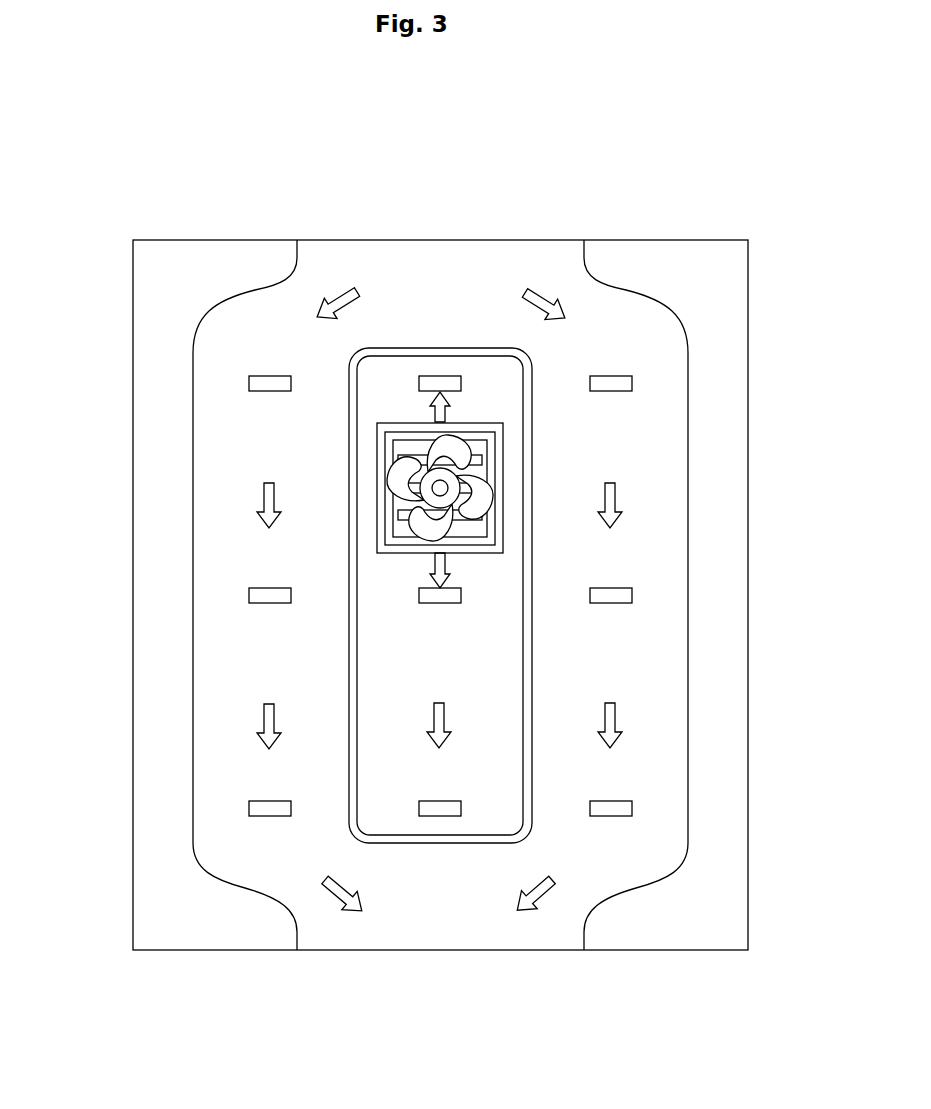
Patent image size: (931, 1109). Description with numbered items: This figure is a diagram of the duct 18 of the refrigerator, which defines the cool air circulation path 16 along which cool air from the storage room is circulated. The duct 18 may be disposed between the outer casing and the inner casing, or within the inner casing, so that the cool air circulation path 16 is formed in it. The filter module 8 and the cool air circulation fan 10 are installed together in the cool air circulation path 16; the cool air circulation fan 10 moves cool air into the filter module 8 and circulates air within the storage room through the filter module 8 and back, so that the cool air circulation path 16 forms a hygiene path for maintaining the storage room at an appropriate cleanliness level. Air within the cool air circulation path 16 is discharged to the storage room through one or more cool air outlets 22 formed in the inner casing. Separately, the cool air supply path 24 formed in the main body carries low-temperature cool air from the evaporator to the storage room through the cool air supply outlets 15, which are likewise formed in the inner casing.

The filter module 8 is at (390, 515).
The cool air circulation fan 10 is at (397, 477).
The cool air supply outlets 15 is at (258, 383).
The cool air circulation path 16 is at (480, 645).
The duct 18 is at (663, 240).
The cool air outlets 22 is at (440, 378).
The cool air supply path 24 is at (648, 703).